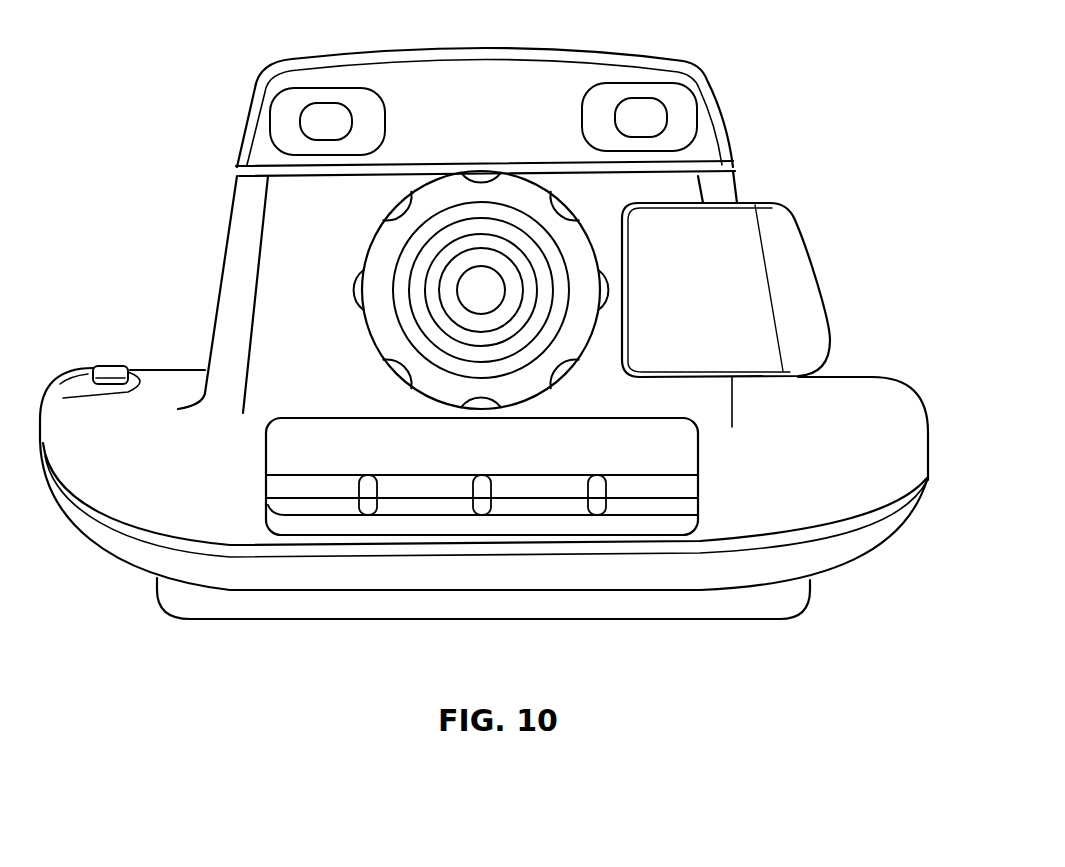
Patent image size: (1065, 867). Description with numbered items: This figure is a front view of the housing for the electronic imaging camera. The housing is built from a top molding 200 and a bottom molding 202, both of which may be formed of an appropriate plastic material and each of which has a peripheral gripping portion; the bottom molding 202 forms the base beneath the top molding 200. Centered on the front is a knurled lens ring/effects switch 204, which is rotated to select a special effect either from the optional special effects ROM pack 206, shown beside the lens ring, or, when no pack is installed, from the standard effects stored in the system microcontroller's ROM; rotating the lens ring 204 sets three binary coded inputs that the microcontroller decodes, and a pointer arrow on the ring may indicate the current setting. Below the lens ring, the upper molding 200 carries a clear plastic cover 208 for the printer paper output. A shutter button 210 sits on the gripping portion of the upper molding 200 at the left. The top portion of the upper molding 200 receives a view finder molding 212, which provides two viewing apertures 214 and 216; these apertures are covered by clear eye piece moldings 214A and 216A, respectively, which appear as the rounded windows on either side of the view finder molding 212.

The top molding 200 is at (822, 406).
The bottom molding 202 is at (832, 560).
The knurled lens ring/effects switch 204 is at (383, 342).
The optional special effects ROM pack 206 is at (750, 235).
The clear plastic cover 208 is at (666, 456).
The shutter button 210 is at (112, 368).
The view finder molding 212 is at (540, 72).
The viewing aperture 214 is at (653, 113).
The clear eye piece molding 214A is at (684, 135).
The viewing aperture 216 is at (317, 112).
The clear eye piece molding 216A is at (283, 133).